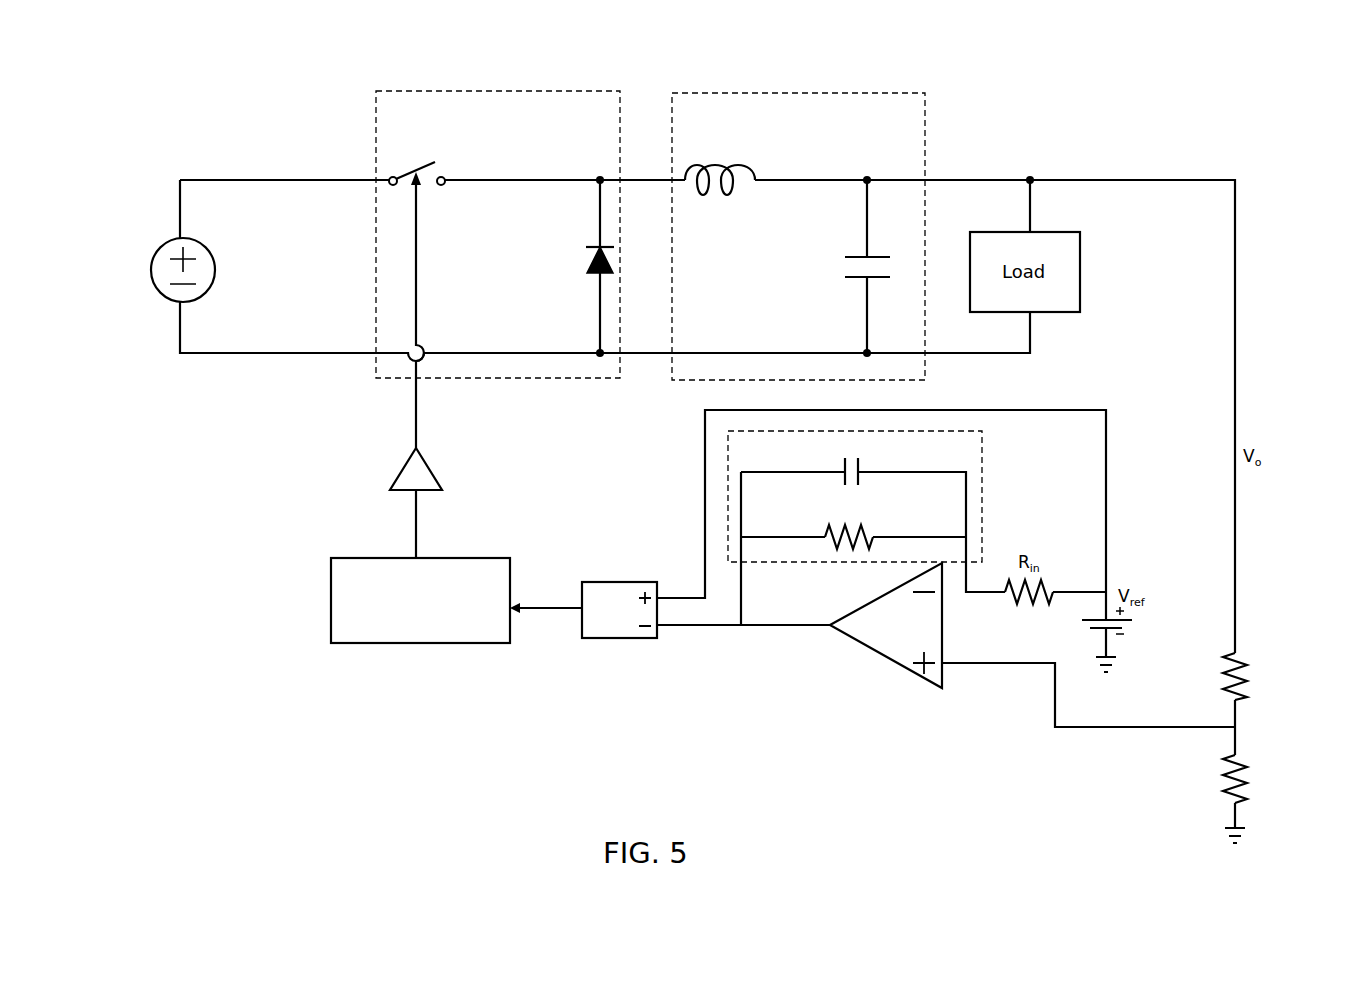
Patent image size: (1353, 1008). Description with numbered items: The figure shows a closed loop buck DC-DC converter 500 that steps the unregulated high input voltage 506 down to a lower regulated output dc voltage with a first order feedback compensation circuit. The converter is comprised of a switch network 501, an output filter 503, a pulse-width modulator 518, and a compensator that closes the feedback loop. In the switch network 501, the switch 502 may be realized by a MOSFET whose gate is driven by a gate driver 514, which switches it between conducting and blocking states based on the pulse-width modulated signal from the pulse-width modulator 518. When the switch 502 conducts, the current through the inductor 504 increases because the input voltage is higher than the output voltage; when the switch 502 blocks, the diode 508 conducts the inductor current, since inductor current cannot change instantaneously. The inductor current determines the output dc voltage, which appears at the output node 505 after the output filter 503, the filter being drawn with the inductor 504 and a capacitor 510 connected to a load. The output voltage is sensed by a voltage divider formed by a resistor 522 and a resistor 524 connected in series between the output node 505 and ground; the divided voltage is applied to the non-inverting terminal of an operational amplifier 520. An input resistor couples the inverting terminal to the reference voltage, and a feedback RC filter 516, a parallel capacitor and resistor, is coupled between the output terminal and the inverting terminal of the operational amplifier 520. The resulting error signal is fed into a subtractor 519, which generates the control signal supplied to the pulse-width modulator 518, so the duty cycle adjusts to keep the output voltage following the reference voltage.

The closed loop buck DC-DC converter 500 is at (224, 430).
The switch network 501 is at (367, 110).
The switch 502 is at (403, 168).
The output filter 503 is at (908, 107).
The inductor 504 is at (718, 158).
The output node 505 is at (1030, 175).
The input voltage 506 is at (215, 278).
The diode 508 is at (577, 250).
The capacitor 510 is at (843, 268).
The gate driver 514 is at (393, 470).
The feedback RC filter 516 is at (953, 450).
The pulse-width modulator 518 is at (340, 593).
The subtractor 519 is at (620, 627).
The operational amplifier 520 is at (875, 655).
The resistor 522 is at (1257, 672).
The resistor 524 is at (1253, 770).